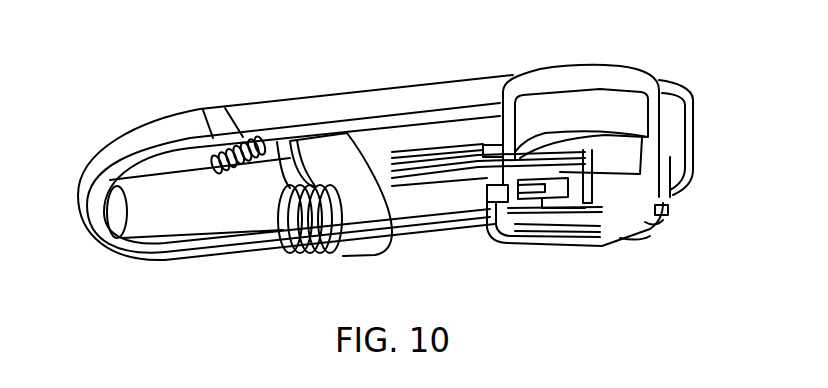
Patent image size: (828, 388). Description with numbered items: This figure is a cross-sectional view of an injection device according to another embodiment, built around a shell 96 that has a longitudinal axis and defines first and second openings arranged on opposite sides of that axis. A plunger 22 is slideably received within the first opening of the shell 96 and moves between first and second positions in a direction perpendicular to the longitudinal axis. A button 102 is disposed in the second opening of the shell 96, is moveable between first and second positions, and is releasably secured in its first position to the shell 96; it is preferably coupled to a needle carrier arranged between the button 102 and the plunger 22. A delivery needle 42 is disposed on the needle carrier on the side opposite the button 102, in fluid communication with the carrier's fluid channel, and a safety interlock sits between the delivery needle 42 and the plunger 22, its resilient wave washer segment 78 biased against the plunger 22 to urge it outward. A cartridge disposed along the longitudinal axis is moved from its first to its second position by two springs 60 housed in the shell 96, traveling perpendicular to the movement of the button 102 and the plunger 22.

The shell 96 is at (401, 91).
The spring 60 is at (214, 147).
The button 102 is at (606, 96).
The delivery needle 42 is at (665, 210).
The plunger 22 is at (663, 220).
The wave washer segment 78 is at (650, 237).